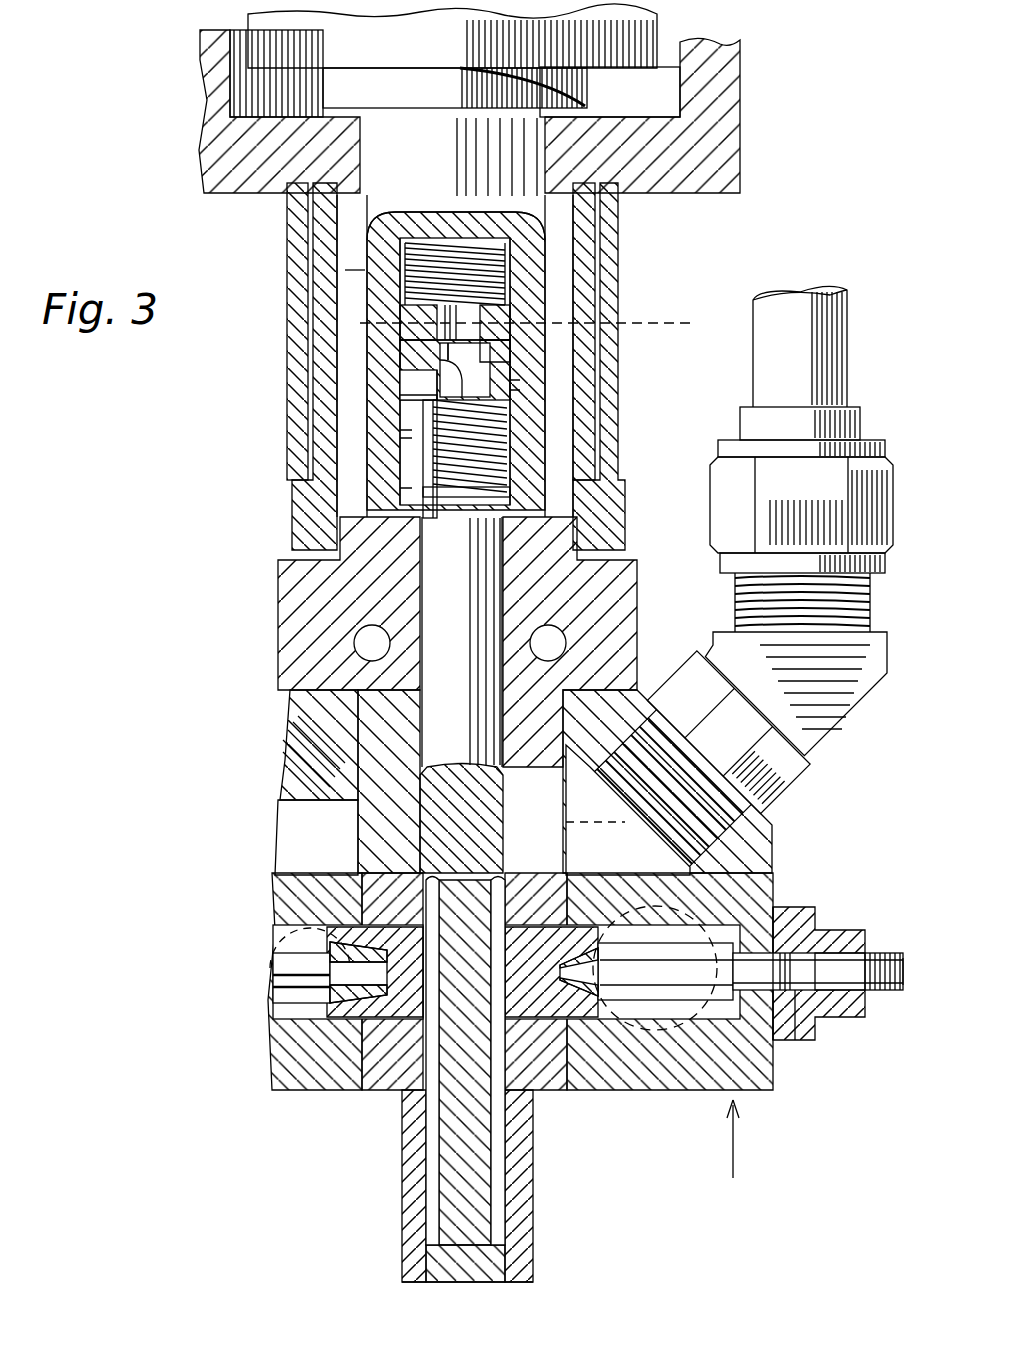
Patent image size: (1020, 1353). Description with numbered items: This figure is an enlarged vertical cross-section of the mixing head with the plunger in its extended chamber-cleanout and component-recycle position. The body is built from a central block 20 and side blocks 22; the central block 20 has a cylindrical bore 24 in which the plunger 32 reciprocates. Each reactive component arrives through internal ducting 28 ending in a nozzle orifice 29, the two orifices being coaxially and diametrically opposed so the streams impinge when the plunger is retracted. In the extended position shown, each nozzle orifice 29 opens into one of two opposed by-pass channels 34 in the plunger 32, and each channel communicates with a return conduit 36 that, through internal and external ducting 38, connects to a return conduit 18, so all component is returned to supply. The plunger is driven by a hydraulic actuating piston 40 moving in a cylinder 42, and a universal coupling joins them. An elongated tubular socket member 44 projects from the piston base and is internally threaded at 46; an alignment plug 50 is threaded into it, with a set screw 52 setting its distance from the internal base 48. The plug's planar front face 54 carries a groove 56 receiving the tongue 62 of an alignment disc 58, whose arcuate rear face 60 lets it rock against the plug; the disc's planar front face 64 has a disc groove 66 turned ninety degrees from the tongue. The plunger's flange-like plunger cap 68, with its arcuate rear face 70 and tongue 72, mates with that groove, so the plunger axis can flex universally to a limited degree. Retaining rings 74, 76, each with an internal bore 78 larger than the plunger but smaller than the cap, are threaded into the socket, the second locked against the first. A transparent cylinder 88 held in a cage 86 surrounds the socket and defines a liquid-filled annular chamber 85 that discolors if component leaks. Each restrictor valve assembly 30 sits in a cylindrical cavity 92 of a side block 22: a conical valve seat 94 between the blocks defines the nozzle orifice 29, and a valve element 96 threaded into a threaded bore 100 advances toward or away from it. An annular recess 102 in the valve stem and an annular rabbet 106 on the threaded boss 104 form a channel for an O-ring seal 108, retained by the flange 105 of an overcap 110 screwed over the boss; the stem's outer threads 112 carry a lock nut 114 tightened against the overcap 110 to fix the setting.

The return conduit 18 is at (833, 330).
The central block 20 is at (420, 1190).
The side block 22 is at (280, 1080).
The cylindrical bore 24 is at (525, 1183).
The internal ducting 28 is at (262, 889).
The nozzle orifice 29 is at (456, 973).
The restrictor valve assembly 30 is at (740, 1152).
The plunger 32 is at (470, 1235).
The by-pass channel 34 is at (438, 1112).
The return conduit 36 is at (396, 868).
The internal and external ducting 38 is at (334, 852).
The actuating piston 40 is at (608, 70).
The cylinder 42 is at (712, 90).
The tubular socket member 44 is at (545, 255).
The internal threads 46 is at (546, 498).
The internal base 48 is at (425, 240).
The alignment plug 50 is at (512, 262).
The set screw 52 is at (495, 278).
The planar front face 54 is at (505, 330).
The groove 56 is at (400, 340).
The alignment disc 58 is at (508, 362).
The arcuate rear face 60 is at (402, 376).
The tongue 62 is at (525, 324).
The front face 64 is at (515, 385).
The disc groove 66 is at (405, 402).
The plunger cap 68 is at (508, 410).
The arcuate rear face 70 is at (452, 369).
The tongue 72 is at (421, 385).
The retaining ring 74 is at (523, 423).
The retaining ring 76 is at (512, 462).
The internal bore 78 is at (412, 435).
The annular chamber 85 is at (351, 257).
The cage 86 is at (292, 222).
The transparent cylinder 88 is at (330, 290).
The cylindrical cavity 92 is at (690, 1090).
The conical valve seat 94 is at (300, 960).
The valve element 96 is at (330, 990).
The threaded bore 100 is at (775, 1042).
The annular recess 102 is at (838, 1020).
The threaded boss 104 is at (800, 907).
The flange 105 is at (840, 940).
The annular rabbet 106 is at (812, 925).
The O-ring seal 108 is at (795, 1040).
The overcap 110 is at (780, 905).
The threads 112 is at (893, 990).
The lock nut 114 is at (878, 1020).